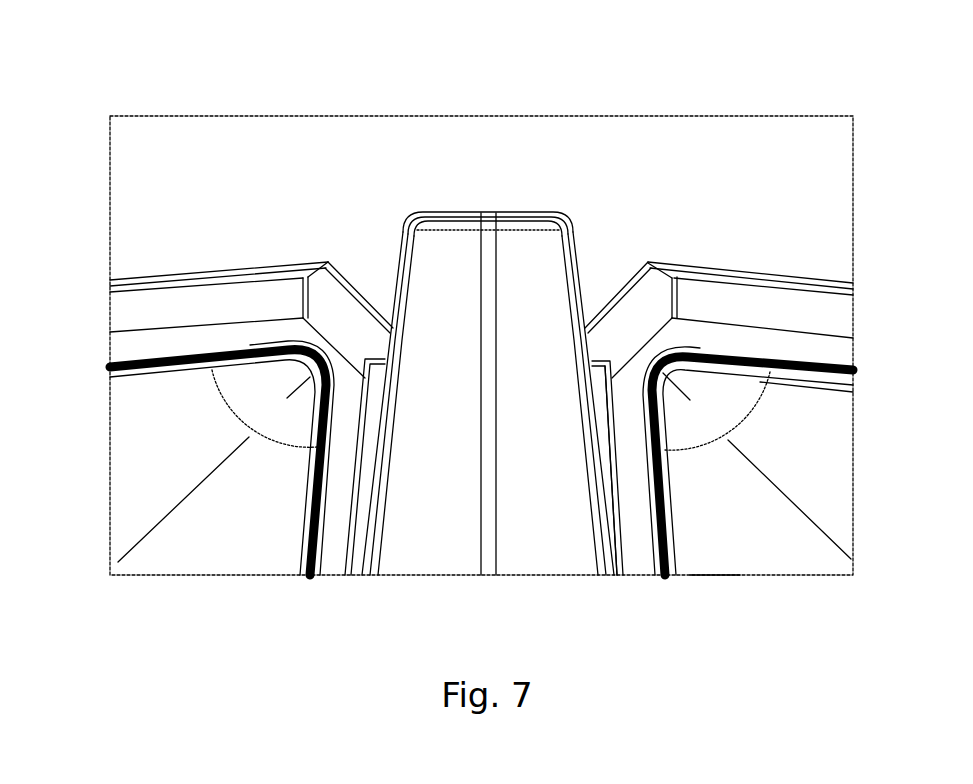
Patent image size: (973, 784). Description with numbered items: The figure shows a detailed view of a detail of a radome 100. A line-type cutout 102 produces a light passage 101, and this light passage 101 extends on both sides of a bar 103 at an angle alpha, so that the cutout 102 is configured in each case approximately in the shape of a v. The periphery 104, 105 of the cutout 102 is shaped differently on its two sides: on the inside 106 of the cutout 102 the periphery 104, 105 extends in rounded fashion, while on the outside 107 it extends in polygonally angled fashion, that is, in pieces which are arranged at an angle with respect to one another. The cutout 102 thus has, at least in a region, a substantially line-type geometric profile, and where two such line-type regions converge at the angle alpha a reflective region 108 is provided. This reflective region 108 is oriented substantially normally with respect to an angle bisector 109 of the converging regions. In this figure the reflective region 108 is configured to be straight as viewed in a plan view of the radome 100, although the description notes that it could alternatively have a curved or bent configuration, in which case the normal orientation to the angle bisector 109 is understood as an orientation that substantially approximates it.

The radome 100 is at (446, 114).
The light passage 101 is at (325, 557).
The line-type cutout 102 is at (124, 350).
The bar 103 is at (527, 242).
The periphery of the cutout 104 is at (783, 328).
The periphery of the cutout 105 is at (773, 380).
The inside of the cutout 106 is at (713, 552).
The outside of the cutout 107 is at (622, 556).
The reflective region 108 is at (334, 347).
The angle bisector 109 is at (157, 530).